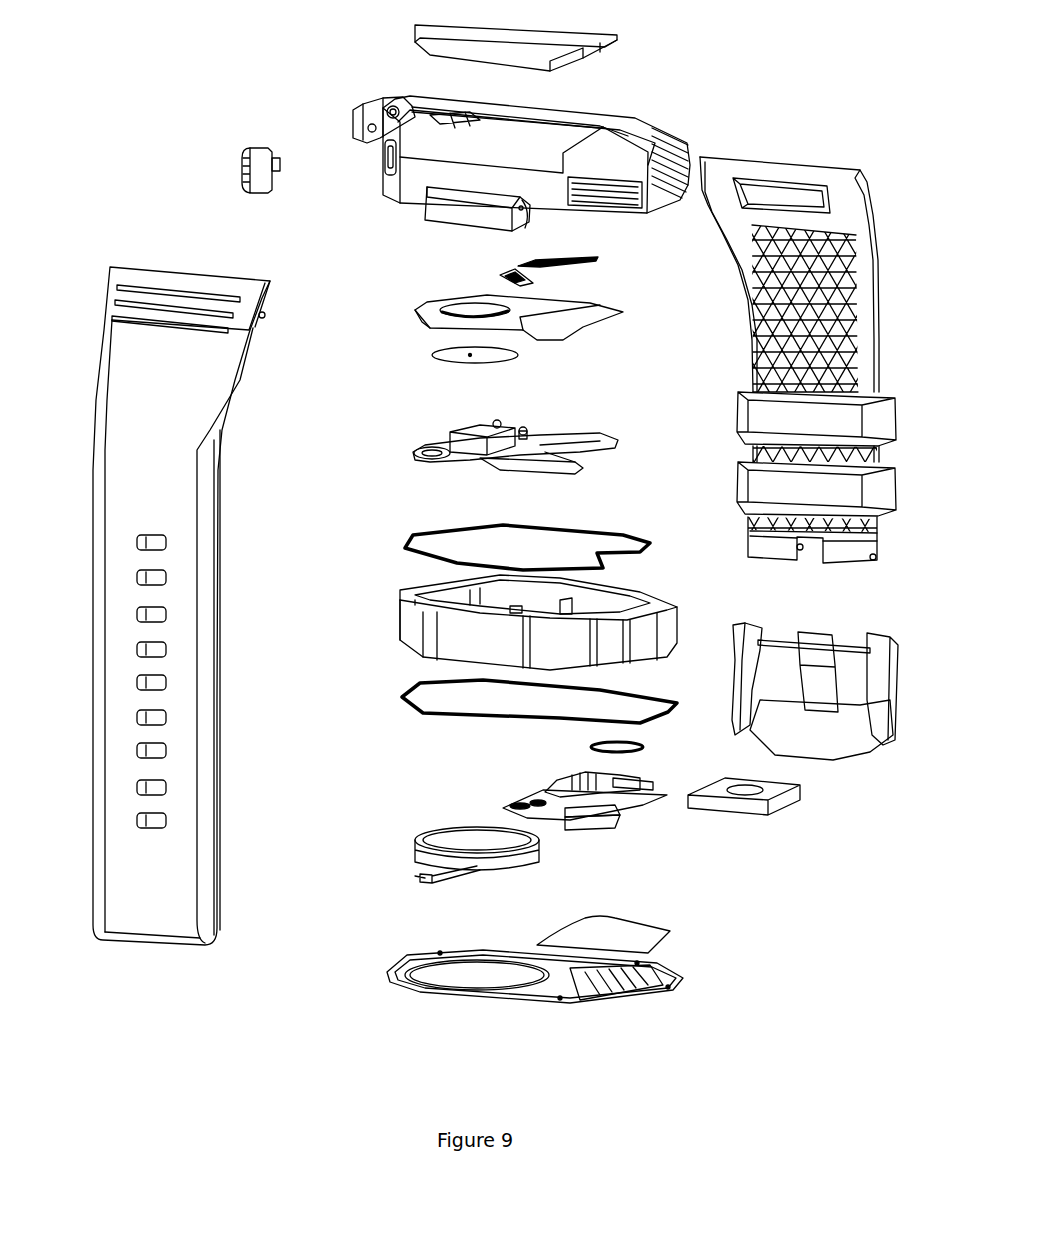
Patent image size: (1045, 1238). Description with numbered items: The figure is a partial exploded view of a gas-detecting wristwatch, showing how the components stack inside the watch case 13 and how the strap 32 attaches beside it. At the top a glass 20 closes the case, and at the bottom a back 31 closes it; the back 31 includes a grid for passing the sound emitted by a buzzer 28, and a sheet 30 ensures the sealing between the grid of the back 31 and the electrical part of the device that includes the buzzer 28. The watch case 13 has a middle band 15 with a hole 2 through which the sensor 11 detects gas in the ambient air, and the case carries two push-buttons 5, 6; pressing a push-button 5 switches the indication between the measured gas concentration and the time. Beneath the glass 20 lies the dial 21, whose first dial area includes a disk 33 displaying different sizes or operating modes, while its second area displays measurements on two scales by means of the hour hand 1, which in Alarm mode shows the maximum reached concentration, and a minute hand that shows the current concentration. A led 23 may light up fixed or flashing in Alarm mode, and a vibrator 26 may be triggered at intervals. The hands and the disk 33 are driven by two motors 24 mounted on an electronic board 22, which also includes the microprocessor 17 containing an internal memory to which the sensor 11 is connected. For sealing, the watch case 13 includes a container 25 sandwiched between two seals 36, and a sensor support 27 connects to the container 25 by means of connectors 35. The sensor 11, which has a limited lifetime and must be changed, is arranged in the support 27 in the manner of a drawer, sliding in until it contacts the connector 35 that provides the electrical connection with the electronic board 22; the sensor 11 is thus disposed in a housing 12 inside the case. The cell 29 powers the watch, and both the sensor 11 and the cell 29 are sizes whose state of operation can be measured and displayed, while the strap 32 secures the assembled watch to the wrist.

The glass 20 is at (615, 38).
The push-button 6 is at (368, 103).
The push-button 5 is at (257, 143).
The watch case 13 is at (600, 127).
The hole 2 is at (660, 142).
The strap 32 is at (847, 180).
The middle band 15 is at (593, 207).
The hour hand 1 is at (533, 283).
The dial 21 is at (617, 317).
The disk 33 is at (515, 357).
The led 23 is at (497, 423).
The motor 24 is at (490, 430).
The electronic board 22 is at (587, 437).
The microprocessor 17 is at (483, 457).
The seals 36 is at (407, 687).
The container 25 is at (647, 650).
The vibrator 26 is at (507, 805).
The connector 35 is at (563, 775).
The cell 29 is at (453, 837).
The housing 12 is at (638, 802).
The sensor 11 is at (780, 800).
The sensor support 27 is at (610, 810).
The buzzer 28 is at (607, 827).
The sheet 30 is at (647, 933).
The back 31 is at (683, 978).